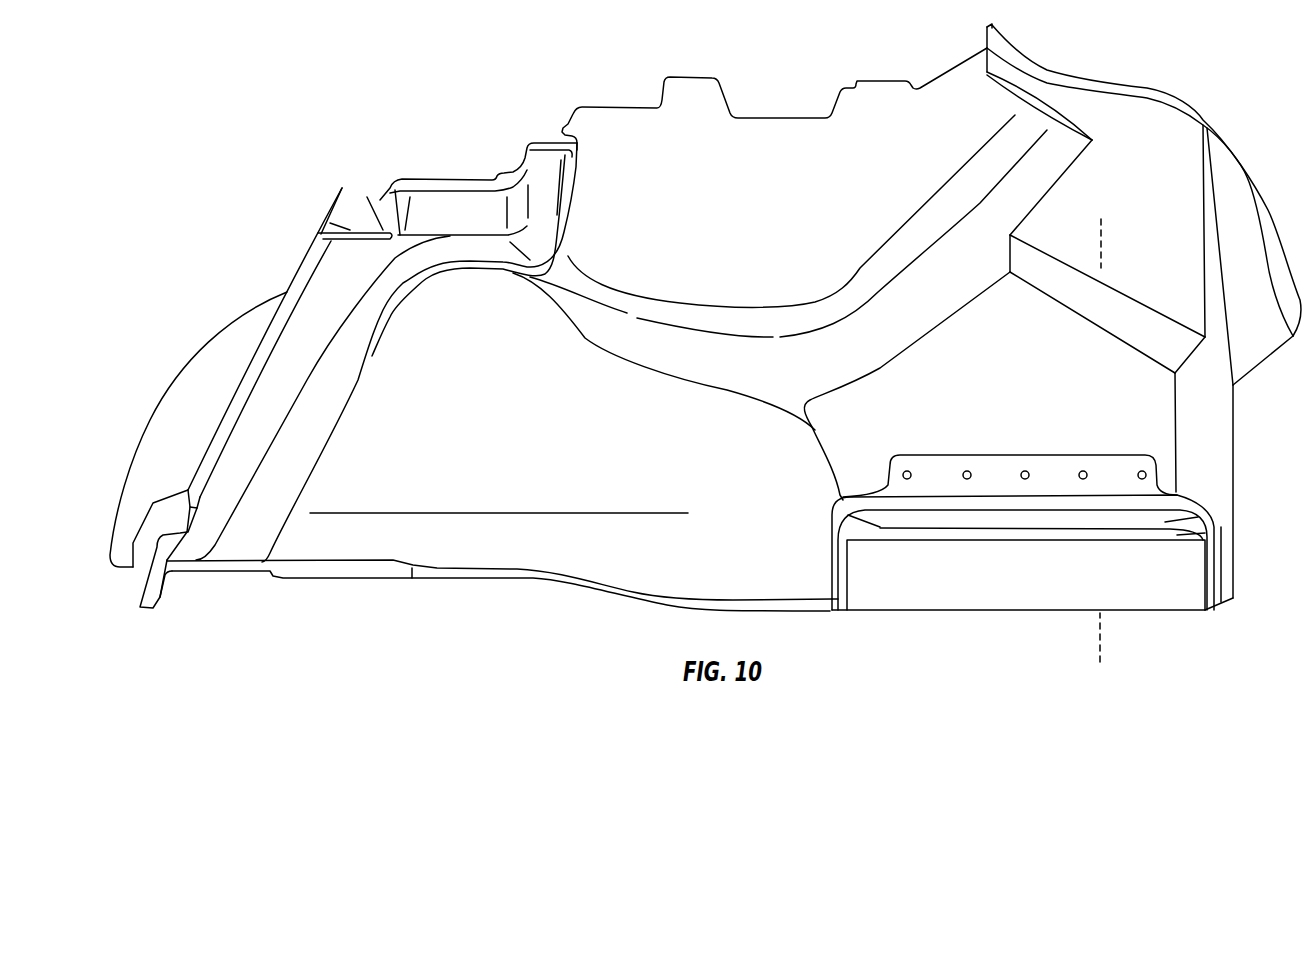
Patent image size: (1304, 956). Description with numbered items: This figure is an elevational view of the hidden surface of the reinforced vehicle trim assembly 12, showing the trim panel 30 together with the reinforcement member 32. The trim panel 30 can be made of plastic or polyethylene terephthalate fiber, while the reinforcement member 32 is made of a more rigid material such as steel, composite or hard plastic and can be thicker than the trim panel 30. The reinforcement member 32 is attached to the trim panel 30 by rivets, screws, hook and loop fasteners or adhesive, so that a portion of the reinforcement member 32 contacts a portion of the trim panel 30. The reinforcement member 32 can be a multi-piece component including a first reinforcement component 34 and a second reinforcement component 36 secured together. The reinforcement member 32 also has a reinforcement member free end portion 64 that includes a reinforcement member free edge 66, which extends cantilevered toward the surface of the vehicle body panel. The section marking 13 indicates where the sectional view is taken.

The reinforced vehicle trim assembly 12 is at (1133, 47).
The section line 13- 13 is at (1101, 219).
The trim panel 30 is at (1148, 426).
The reinforcement member 32 is at (1213, 527).
The first reinforcement component 34 is at (935, 470).
The second reinforcement component 36 is at (889, 587).
The reinforcement member free end portion 64 is at (1168, 587).
The reinforcement member free edge 66 is at (1117, 612).